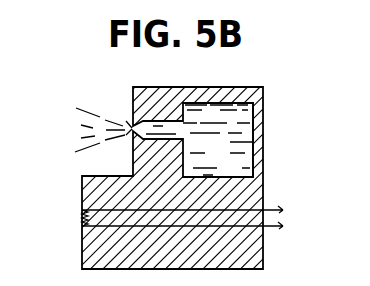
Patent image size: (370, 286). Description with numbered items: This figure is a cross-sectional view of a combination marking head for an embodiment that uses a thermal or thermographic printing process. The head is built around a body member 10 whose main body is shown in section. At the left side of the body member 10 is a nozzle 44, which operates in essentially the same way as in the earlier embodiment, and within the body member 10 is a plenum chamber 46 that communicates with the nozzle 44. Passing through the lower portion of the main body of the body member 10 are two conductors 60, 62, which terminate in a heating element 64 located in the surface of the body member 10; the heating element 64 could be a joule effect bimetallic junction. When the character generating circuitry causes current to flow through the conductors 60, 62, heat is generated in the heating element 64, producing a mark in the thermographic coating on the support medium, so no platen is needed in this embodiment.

The body member 10 is at (229, 92).
The nozzles 44 is at (132, 128).
The plenum chamber 46 is at (233, 137).
The conductor 60 is at (273, 210).
The conductor 62 is at (273, 228).
The heating element 64 is at (82, 218).